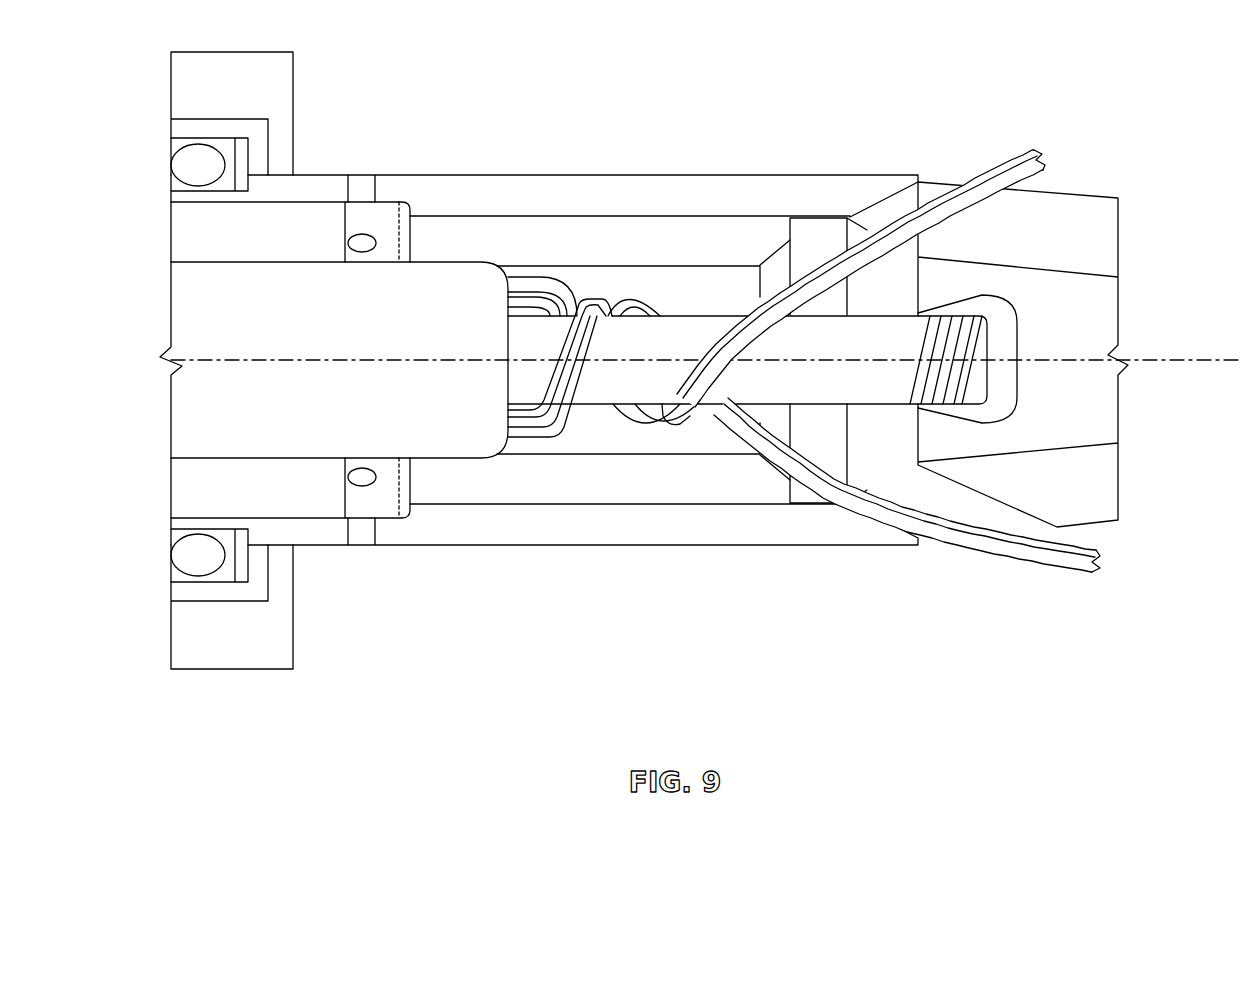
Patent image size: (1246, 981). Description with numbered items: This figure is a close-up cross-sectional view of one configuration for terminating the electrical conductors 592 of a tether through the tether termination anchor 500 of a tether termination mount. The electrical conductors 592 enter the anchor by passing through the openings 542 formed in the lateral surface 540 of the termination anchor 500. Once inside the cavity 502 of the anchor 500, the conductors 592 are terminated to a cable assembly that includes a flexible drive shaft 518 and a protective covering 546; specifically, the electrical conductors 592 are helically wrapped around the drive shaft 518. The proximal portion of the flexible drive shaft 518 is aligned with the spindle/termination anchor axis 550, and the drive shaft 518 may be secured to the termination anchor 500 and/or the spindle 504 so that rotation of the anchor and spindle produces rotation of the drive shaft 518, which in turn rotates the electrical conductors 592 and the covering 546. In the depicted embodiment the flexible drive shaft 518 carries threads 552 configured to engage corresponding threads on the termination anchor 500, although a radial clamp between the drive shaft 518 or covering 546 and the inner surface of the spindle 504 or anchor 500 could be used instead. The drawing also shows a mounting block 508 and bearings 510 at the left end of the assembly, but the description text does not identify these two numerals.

The termination anchor 500 is at (862, 190).
The cavity 502 is at (873, 432).
The spindle 504 is at (497, 245).
The mounting block 508 is at (235, 637).
The bearing 510 is at (188, 555).
The flexible drive shaft 518 is at (677, 345).
The lateral surface 540 is at (1101, 193).
The openings 542 is at (947, 182).
The protective covering 546 is at (373, 305).
The spindle/termination anchor axis 550 is at (1192, 352).
The threads 552 is at (948, 372).
The electrical conductors 592 is at (557, 383).